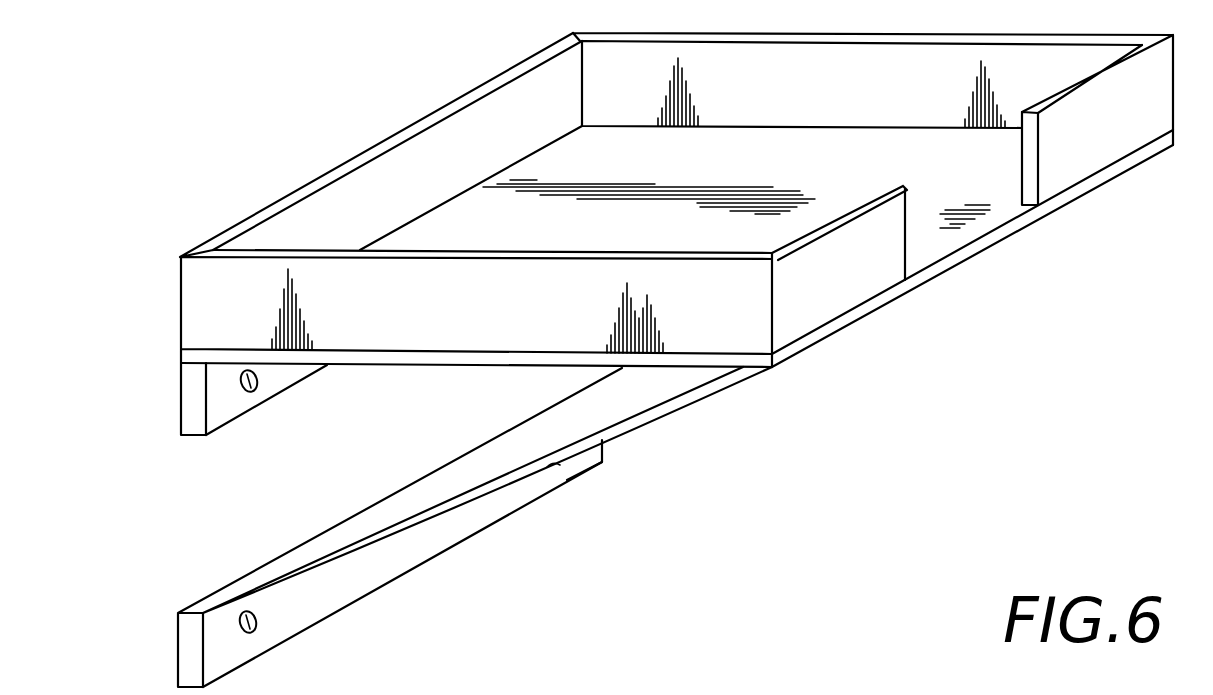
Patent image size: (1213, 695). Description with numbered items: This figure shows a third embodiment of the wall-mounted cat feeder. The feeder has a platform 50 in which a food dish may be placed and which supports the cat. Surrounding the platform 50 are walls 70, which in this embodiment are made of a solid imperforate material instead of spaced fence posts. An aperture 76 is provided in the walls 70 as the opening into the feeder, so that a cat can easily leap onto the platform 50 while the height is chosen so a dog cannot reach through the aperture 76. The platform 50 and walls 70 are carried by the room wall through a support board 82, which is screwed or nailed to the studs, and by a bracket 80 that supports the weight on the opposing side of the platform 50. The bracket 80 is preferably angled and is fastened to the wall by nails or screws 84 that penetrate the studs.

The platform 50 is at (1007, 227).
The walls 70 is at (215, 303).
The aperture 76 is at (1005, 168).
The bracket 80 is at (348, 524).
The support board 82 is at (192, 405).
The nails or screws 84 is at (262, 382).